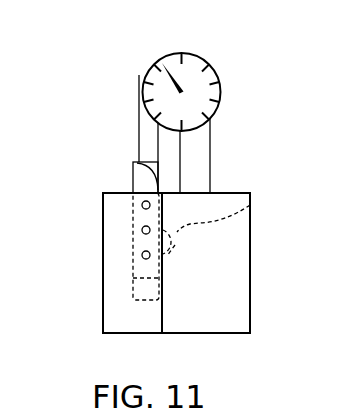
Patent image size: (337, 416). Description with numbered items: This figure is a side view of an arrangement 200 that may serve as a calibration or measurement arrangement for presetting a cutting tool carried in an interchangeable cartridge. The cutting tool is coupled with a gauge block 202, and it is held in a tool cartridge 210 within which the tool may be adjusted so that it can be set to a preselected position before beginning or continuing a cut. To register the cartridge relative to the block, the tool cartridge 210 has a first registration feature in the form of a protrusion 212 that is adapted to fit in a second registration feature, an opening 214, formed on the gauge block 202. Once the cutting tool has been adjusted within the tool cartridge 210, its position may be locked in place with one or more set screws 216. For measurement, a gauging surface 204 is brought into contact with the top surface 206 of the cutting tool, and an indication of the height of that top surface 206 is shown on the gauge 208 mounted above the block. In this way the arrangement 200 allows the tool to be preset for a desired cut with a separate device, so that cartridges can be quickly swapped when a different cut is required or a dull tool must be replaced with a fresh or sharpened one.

The arrangement 200 is at (239, 101).
The gauge block 202 is at (213, 322).
The gauging surface 204 is at (132, 187).
The top surface 206 is at (138, 148).
The gauge 208 is at (203, 70).
The tool cartridge 210 is at (110, 317).
The protrusion 212 is at (133, 278).
The opening 214 is at (250, 205).
The set screws 216 is at (141, 207).